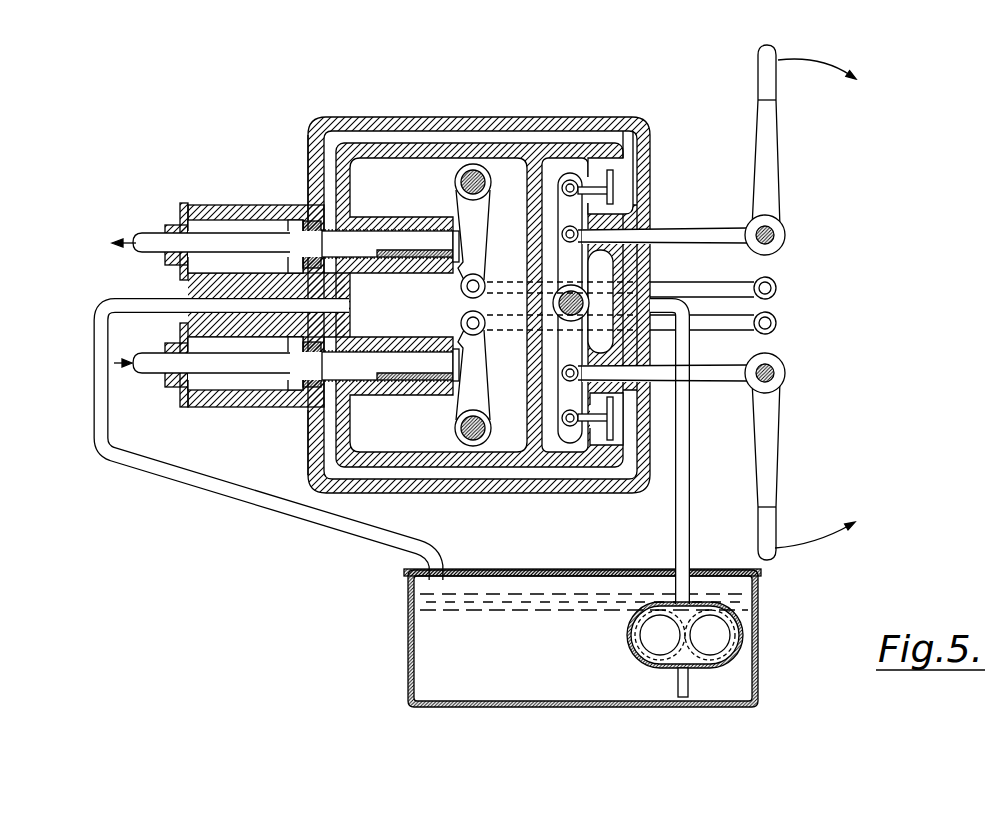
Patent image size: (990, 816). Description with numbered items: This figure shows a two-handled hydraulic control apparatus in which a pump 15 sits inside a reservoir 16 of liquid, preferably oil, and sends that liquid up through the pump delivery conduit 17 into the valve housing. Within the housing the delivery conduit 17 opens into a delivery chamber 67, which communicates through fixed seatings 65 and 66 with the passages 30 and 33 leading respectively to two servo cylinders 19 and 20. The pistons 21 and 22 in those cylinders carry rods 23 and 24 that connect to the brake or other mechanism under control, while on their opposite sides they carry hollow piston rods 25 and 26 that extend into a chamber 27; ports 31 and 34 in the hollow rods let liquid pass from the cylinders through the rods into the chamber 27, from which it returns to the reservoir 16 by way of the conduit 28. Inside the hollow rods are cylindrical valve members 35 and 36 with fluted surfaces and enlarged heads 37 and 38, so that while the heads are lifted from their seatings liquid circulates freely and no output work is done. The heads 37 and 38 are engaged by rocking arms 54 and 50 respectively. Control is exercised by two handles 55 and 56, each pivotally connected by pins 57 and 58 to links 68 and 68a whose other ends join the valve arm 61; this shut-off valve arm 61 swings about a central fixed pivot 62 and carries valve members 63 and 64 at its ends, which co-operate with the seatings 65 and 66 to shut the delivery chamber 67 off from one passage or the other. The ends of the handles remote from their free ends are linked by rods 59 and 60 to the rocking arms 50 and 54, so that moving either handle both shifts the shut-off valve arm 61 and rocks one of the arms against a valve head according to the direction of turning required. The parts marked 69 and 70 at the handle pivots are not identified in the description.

The pump 15 is at (624, 638).
The reservoir 16 is at (758, 628).
The pump delivery conduit 17 is at (693, 455).
The servo cylinder 19 is at (218, 226).
The servo cylinder 20 is at (230, 390).
The piston 21 is at (298, 232).
The piston 22 is at (297, 385).
The piston rod 23 is at (148, 238).
The piston rod 24 is at (152, 370).
The hollow piston rod 25 is at (391, 232).
The hollow piston rod 26 is at (416, 379).
The chamber 27 is at (405, 437).
The conduit 28 is at (232, 496).
The passage 30 is at (483, 138).
The ports 31 is at (318, 200).
The passage 33 is at (478, 472).
The ports 34 is at (317, 427).
The cylindrical valve member 35 is at (422, 242).
The cylindrical valve member 36 is at (397, 360).
The head 37 is at (456, 265).
The head 38 is at (461, 349).
The rocking arm 50 is at (479, 373).
The rocking arm 54 is at (482, 251).
The handle 55 is at (770, 162).
The handle 56 is at (768, 455).
The pin 57 is at (773, 237).
The pin 58 is at (773, 371).
The rod 59 is at (673, 288).
The rod 60 is at (714, 322).
The valve arm 61 is at (577, 265).
The central fixed pivot 62 is at (581, 306).
The valve member 63 is at (613, 183).
The valve member 64 is at (614, 405).
The fixed seating 65 is at (610, 155).
The fixed seating 66 is at (603, 467).
The delivery chamber 67 is at (552, 437).
The link 68 is at (717, 233).
The link 68a is at (718, 377).
The hub 69 is at (781, 227).
The hub 70 is at (785, 375).